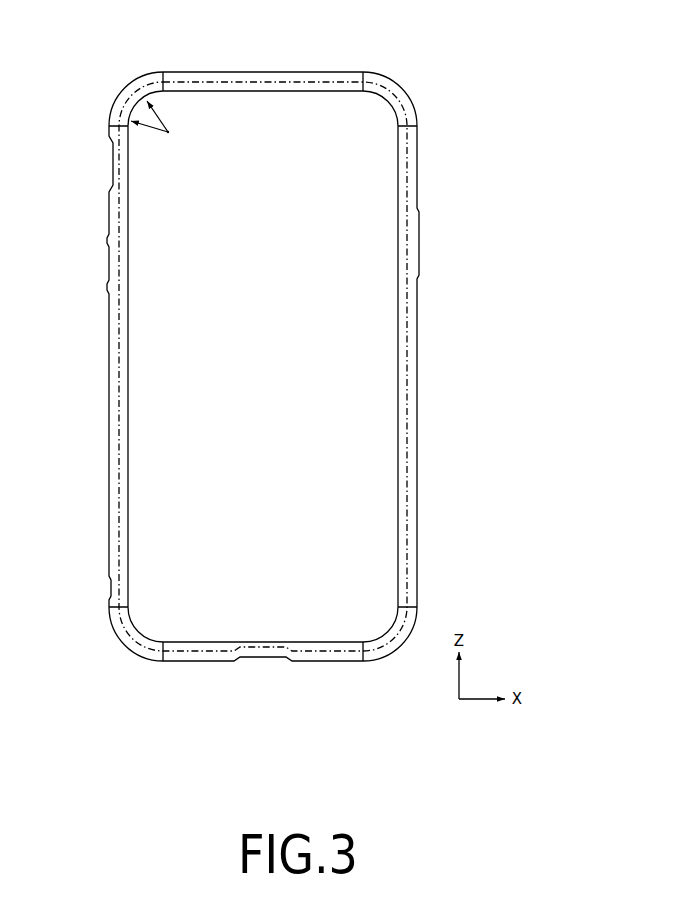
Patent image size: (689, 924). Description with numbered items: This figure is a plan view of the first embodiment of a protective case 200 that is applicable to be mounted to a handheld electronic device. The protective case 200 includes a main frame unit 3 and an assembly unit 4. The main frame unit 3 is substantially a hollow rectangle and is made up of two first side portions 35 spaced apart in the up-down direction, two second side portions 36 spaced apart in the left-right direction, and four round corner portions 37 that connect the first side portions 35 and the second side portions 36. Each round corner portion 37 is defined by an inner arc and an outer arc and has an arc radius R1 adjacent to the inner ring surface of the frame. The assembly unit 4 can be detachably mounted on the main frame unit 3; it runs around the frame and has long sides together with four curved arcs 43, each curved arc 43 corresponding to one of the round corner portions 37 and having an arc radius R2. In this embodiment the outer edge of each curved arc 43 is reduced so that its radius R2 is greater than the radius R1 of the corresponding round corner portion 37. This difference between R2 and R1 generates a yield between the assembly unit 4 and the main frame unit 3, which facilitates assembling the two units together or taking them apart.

The protective case 200 is at (341, 56).
The main frame unit 3 is at (418, 305).
The assembly unit 4 is at (405, 183).
The first side portions 35 is at (228, 72).
The second side portions 36 is at (108, 349).
The round corner portions 37 is at (150, 87).
The curved arcs 43 is at (133, 107).
The arc radius of round corner portion R1 is at (160, 110).
The arc radius of curved arc R2 is at (150, 128).